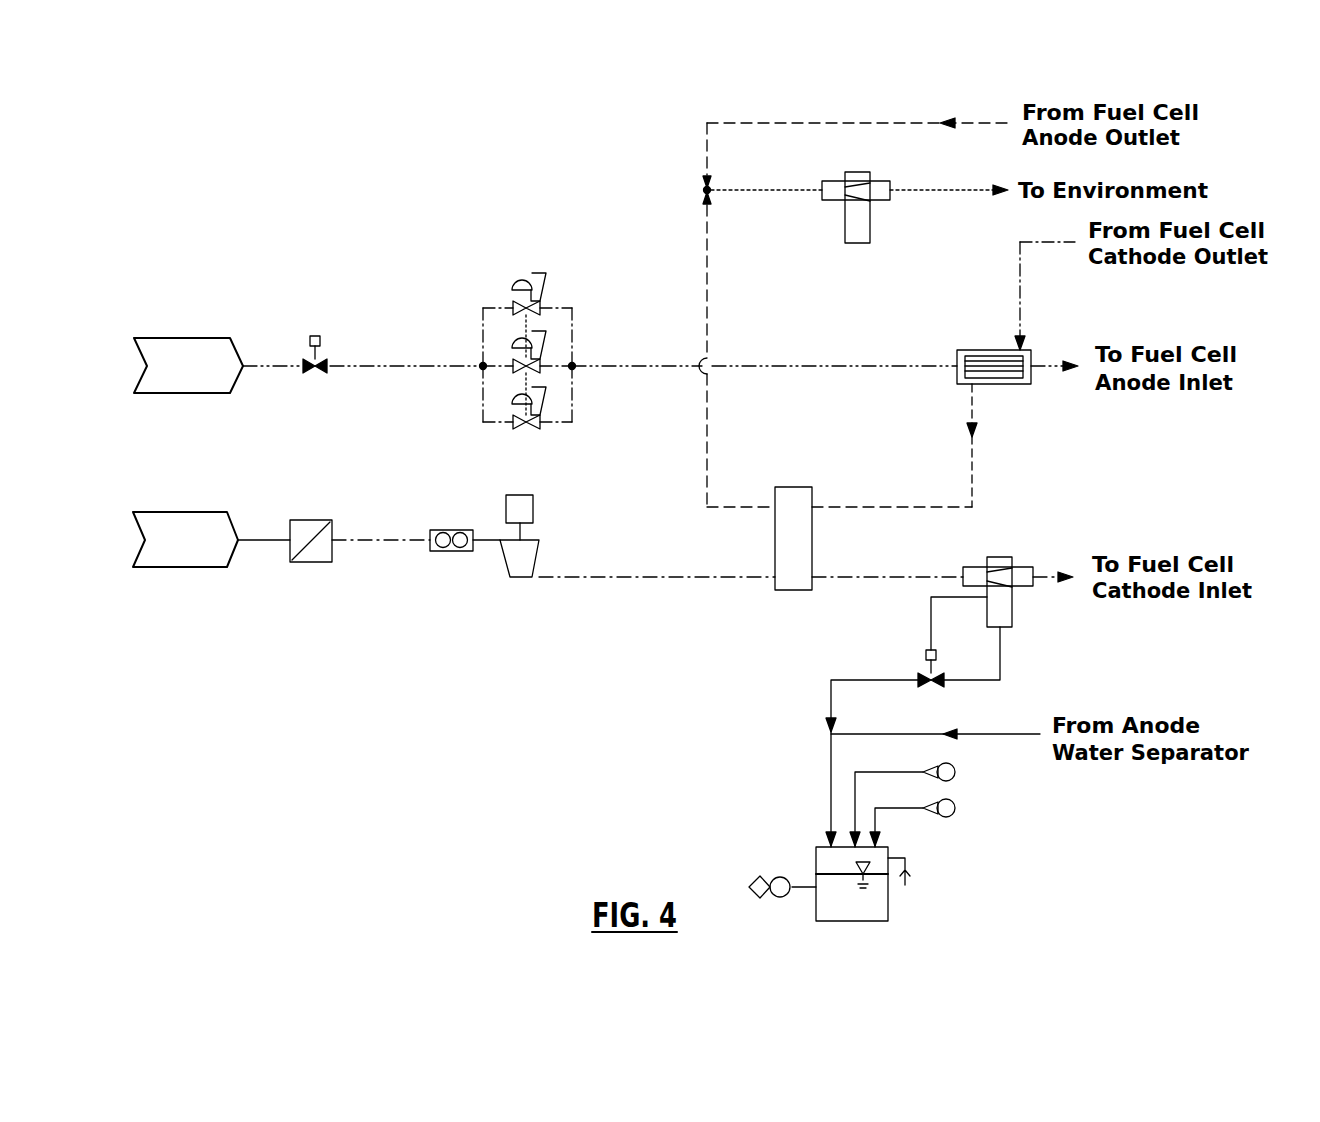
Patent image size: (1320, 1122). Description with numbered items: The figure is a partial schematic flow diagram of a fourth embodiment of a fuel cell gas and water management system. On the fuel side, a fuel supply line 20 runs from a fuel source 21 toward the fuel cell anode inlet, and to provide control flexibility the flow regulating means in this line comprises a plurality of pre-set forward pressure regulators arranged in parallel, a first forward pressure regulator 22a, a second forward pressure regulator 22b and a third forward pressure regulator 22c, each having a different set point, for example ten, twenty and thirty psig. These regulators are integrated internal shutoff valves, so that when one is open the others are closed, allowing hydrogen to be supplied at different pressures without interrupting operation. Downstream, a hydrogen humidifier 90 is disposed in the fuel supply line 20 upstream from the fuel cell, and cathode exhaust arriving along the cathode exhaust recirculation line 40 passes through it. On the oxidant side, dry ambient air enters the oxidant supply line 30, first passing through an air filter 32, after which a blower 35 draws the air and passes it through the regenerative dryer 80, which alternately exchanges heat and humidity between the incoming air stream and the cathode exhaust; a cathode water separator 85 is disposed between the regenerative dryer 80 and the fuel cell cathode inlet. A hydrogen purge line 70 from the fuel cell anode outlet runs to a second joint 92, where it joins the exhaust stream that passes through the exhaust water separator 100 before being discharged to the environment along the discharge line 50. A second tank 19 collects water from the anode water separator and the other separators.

The second tank 19 is at (883, 905).
The fuel supply line 20 is at (368, 364).
The fuel source 21 is at (215, 358).
The first forward pressure regulator 22a is at (540, 285).
The second forward pressure regulator 22b is at (545, 352).
The third forward pressure regulator 22c is at (545, 413).
The oxidant supply line 30 is at (264, 540).
The air filter 32 is at (317, 550).
The blower 35 is at (509, 562).
The cathode exhaust recirculation line 40 is at (1040, 242).
The discharge line 50 is at (950, 192).
The hydrogen purge line 70 is at (968, 124).
The regenerative dryer 80 is at (775, 582).
The cathode water separator 85 is at (1010, 570).
The hydrogen humidifier 90 is at (1010, 375).
The second joint 92 is at (705, 190).
The exhaust water separator 100 is at (850, 222).